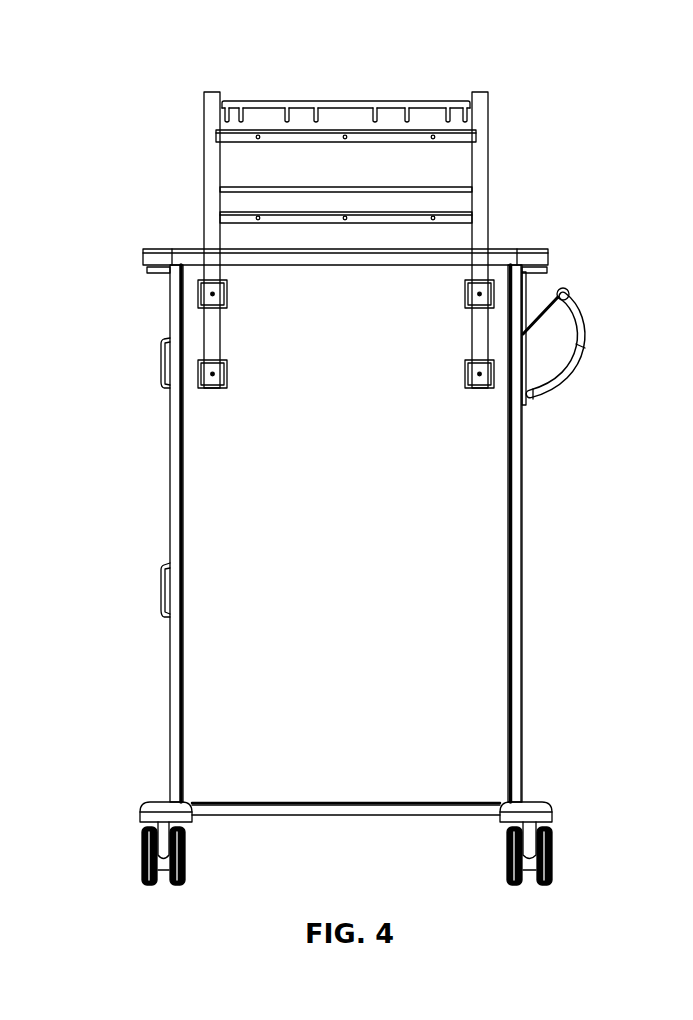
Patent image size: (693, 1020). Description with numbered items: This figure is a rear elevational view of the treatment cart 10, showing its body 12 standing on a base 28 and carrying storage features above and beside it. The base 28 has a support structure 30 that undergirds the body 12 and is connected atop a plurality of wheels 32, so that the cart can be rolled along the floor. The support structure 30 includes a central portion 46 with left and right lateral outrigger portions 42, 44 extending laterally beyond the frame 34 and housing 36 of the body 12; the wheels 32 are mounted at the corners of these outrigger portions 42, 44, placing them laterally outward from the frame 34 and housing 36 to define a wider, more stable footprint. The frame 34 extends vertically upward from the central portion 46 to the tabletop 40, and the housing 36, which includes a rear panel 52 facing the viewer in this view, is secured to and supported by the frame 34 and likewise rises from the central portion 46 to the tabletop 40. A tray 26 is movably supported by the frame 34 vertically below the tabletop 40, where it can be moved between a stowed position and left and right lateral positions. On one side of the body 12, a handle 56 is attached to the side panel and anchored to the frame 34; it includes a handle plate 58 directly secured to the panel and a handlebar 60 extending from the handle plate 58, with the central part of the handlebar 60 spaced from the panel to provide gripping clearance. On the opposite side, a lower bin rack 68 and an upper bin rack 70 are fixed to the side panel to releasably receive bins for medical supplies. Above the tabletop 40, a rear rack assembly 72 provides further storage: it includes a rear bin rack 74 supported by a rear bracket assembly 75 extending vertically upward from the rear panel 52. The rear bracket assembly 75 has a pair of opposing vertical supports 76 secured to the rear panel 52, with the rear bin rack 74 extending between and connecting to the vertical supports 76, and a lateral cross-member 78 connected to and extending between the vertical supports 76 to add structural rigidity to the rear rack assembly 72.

The treatment cart 10 is at (601, 94).
The body 12 is at (96, 463).
The tray 26 is at (163, 275).
The base 28 is at (332, 811).
The support structure 30 is at (346, 844).
The wheels 32 is at (188, 856).
The frame 34 is at (523, 588).
The housing 36 is at (396, 533).
The tabletop 40 is at (508, 249).
The left lateral outrigger portion 42 is at (542, 808).
The right lateral outrigger portion 44 is at (165, 804).
The central portion 46 is at (397, 812).
The rear panel 52 is at (452, 643).
The handle 56 is at (601, 345).
The handle plate 58 is at (539, 330).
The handlebar 60 is at (574, 311).
The lower bin rack 68 is at (160, 585).
The upper bin rack 70 is at (160, 363).
The rear rack assembly 72 is at (335, 224).
The rear bin rack 74 is at (345, 101).
The rear bracket assembly 75 is at (203, 198).
The vertical supports 76 is at (204, 160).
The lateral cross-member 78 is at (309, 197).